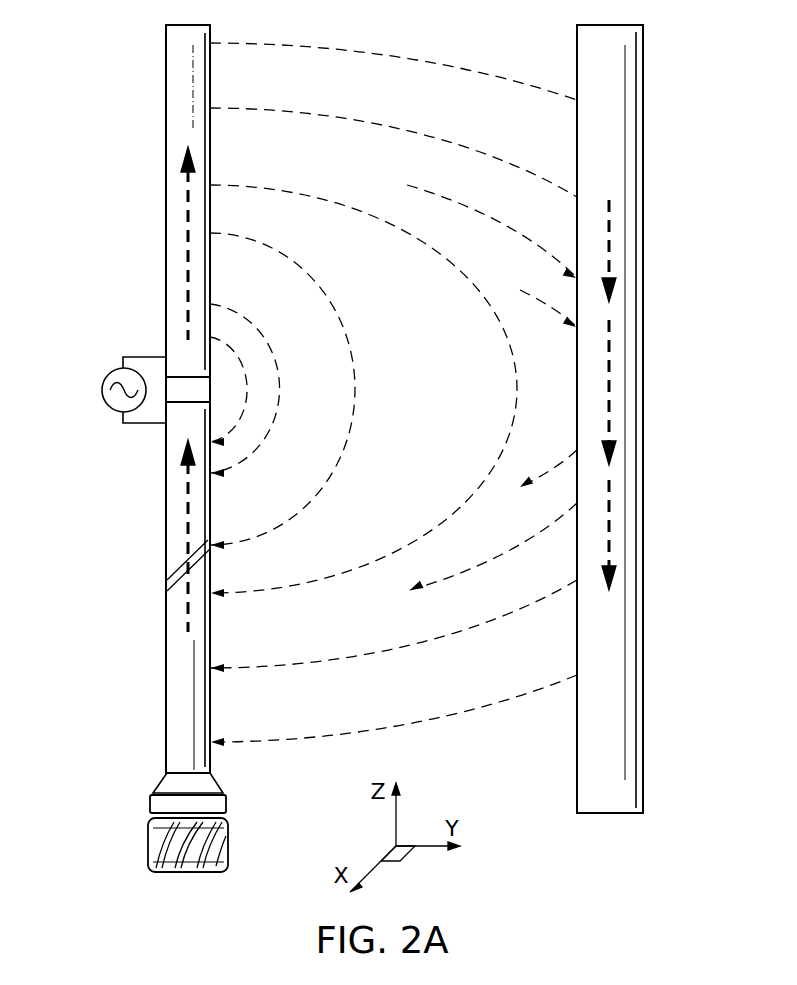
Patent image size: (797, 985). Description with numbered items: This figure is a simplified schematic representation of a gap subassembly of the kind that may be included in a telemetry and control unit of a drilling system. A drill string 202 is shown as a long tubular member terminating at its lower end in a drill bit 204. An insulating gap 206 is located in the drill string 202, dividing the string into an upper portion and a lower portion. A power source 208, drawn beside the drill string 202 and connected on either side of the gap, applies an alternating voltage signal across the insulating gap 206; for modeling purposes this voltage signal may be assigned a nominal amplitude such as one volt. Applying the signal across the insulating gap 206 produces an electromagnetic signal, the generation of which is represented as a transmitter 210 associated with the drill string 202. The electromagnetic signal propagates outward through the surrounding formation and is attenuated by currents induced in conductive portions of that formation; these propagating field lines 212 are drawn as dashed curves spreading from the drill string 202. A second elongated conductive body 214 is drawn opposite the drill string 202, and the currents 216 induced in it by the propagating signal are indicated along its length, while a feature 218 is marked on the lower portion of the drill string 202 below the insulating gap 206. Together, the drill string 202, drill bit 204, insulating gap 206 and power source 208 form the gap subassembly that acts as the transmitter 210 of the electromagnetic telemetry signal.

The drill string 202 is at (160, 675).
The drill bit 204 is at (147, 843).
The insulating gap 206 is at (180, 388).
The power source 208 is at (101, 393).
The transmitter 210 is at (167, 250).
The electromagnetic field lines 212 is at (455, 633).
The receiver electrode / casing 214 is at (650, 705).
The induced current in receiver 216 is at (611, 388).
The insulated section 218 is at (184, 566).